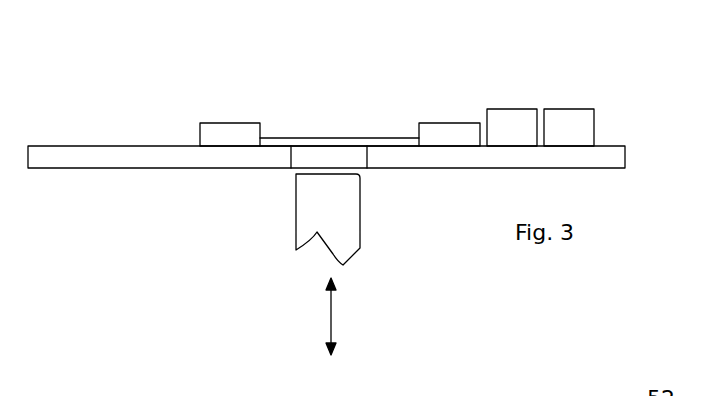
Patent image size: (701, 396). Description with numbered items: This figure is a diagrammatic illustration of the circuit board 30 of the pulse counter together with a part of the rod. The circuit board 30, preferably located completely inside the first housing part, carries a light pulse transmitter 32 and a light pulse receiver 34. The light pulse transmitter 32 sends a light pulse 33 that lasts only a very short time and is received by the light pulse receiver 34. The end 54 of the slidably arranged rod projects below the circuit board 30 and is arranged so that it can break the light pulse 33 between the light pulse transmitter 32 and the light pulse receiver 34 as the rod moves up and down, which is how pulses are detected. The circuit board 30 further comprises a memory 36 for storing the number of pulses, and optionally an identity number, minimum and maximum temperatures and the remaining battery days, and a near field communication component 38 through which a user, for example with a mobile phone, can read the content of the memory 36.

The circuit board 30 is at (134, 156).
The light pulse transmitter 32 is at (212, 135).
The light pulse 33 is at (370, 137).
The light pulse receiver 34 is at (461, 136).
The memory 36 is at (508, 118).
The near field communication component 38 is at (578, 123).
The end of the rod 54 is at (301, 212).